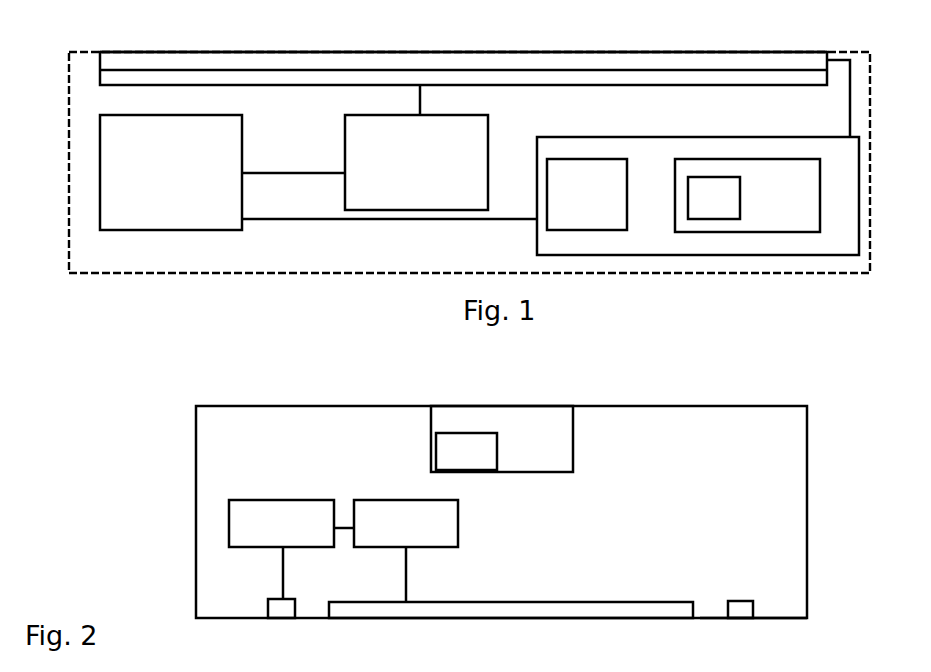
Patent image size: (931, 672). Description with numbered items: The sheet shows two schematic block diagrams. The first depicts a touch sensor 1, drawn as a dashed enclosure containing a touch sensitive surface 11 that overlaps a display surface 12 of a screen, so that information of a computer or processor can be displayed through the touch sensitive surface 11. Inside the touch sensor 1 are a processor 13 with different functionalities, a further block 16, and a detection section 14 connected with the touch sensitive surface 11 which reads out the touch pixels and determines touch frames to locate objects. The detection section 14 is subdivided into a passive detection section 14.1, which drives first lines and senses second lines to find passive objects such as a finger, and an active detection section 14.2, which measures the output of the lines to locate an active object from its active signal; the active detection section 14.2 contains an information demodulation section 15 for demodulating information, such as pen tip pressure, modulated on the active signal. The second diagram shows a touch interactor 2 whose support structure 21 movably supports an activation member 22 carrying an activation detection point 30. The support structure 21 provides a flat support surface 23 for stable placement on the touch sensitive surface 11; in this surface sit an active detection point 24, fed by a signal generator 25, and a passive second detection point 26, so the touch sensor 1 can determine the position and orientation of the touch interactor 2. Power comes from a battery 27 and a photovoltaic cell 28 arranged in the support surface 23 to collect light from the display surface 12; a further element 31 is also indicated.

In FIG. 1, the touch sensor 1 is at (290, 141).
In FIG. 1, the touch sensitive surface 11 is at (533, 55).
In FIG. 1, the display surface 12 is at (316, 75).
In FIG. 1, the processor 13 is at (136, 184).
In FIG. 1, the detection section 14 is at (636, 214).
In FIG. 1, the passive detection section 14.1 is at (572, 206).
In FIG. 1, the active detection section 14.2 is at (754, 207).
In FIG. 1, the information demodulation section 15 is at (699, 207).
In FIG. 1, the transceiver 16 is at (391, 164).
In FIG. 2, the touch interactor 2 is at (140, 450).
In FIG. 2, the support structure 21 is at (723, 466).
In FIG. 2, the activation member 22 is at (511, 439).
In FIG. 2, the support surface 23 is at (780, 620).
In FIG. 2, the active detection point 24 is at (282, 610).
In FIG. 2, the signal generator 25 is at (261, 536).
In FIG. 2, the second detection point 26 is at (740, 612).
In FIG. 2, the battery 27 is at (390, 536).
In FIG. 2, the photovoltaic cell 28 is at (565, 608).
In FIG. 2, the activation detection point 30 is at (452, 463).
In FIG. 2, the connector 31 is at (445, 669).